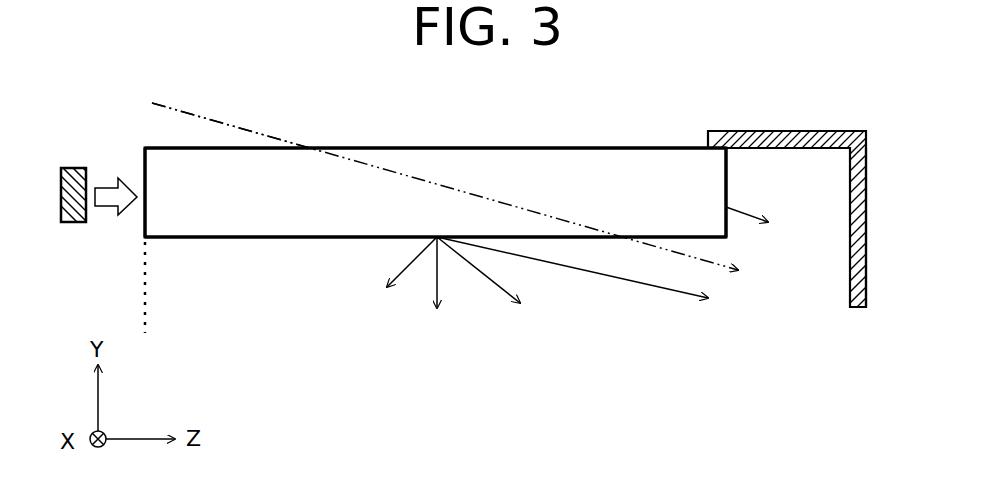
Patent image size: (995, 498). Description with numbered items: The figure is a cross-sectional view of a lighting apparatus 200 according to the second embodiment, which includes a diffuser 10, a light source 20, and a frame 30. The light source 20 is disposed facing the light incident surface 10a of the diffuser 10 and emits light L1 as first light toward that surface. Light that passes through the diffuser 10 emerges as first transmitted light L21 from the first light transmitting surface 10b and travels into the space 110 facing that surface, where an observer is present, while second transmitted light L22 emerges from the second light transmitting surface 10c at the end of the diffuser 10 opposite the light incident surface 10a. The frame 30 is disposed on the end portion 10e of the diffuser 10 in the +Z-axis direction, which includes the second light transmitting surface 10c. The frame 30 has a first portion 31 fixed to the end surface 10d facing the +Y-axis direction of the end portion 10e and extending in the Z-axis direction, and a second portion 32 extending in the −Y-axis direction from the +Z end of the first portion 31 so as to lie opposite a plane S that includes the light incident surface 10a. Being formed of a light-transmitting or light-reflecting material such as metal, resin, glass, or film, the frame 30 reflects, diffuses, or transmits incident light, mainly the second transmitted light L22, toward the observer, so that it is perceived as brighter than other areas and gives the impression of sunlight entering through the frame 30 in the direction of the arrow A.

The diffuser 10 is at (557, 158).
The light incident surface 10a is at (145, 150).
The first light transmitting surface 10b is at (378, 240).
The second light transmitting surface 10c is at (728, 158).
The end surface 10d is at (690, 145).
The end portion in the +Z-axis direction 10e is at (712, 190).
The light source 20 is at (70, 168).
The frame 30 is at (723, 131).
The first portion 31 is at (790, 131).
The second portion 32 is at (850, 272).
The space 110 is at (433, 389).
The lighting apparatus 200 is at (342, 118).
The arrow A is at (282, 139).
The light L1 is at (108, 215).
The first transmitted light L21 is at (405, 268).
The second transmitted light L22 is at (757, 222).
The plane S is at (148, 322).